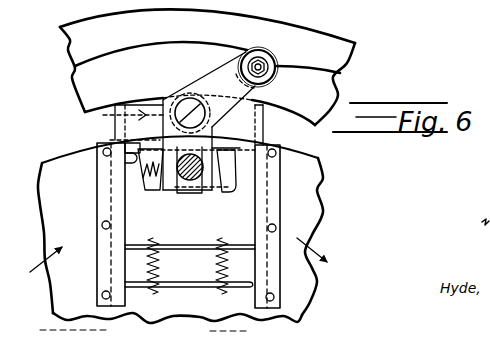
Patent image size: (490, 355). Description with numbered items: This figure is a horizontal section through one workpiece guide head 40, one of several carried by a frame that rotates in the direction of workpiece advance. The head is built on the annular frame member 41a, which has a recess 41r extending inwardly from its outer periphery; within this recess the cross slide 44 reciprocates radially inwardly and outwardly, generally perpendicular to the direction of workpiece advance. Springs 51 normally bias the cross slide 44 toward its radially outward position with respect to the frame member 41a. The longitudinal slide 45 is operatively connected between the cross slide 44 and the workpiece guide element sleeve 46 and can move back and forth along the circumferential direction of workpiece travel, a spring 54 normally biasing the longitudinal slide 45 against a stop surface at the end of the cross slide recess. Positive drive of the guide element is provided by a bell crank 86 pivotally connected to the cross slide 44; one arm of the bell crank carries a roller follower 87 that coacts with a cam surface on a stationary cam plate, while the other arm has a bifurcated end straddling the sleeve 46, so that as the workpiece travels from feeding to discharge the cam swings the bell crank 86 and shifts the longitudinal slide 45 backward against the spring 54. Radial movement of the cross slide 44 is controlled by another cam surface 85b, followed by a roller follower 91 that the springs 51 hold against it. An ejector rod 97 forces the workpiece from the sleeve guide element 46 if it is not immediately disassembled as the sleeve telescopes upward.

The bell crank 86 is at (66, 48).
The roller follower 87 is at (279, 74).
The cam surface 85b is at (152, 97).
The roller follower 91 is at (112, 118).
The ejector rod 97 is at (196, 156).
The spring 54 is at (163, 180).
The workpiece guide element sleeve 46 is at (180, 195).
The longitudinal slide 45 is at (232, 184).
The cross slide 44 is at (190, 199).
The springs 51 is at (214, 278).
The recess 41r is at (197, 280).
The annular frame member 41a is at (318, 180).
The workpiece guide head 40 is at (298, 227).